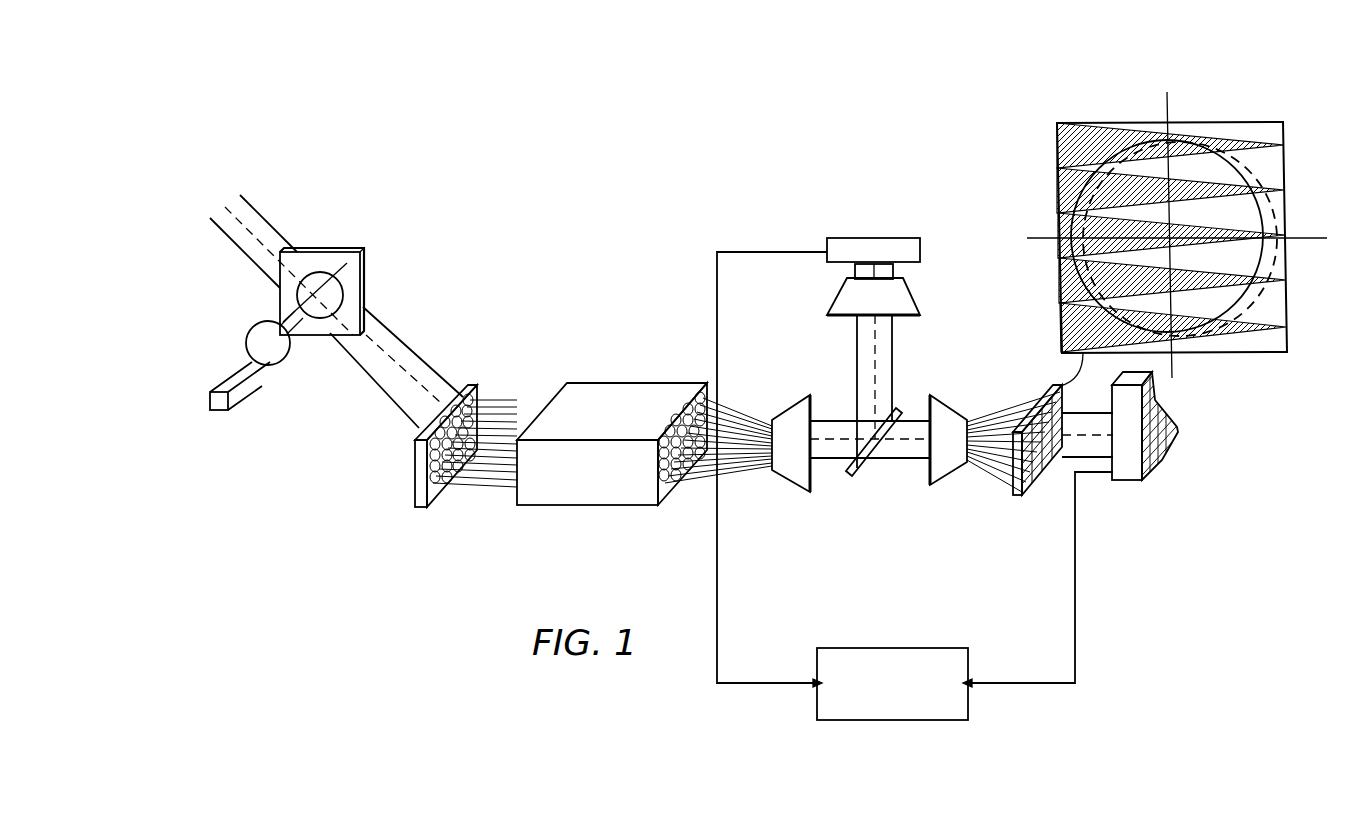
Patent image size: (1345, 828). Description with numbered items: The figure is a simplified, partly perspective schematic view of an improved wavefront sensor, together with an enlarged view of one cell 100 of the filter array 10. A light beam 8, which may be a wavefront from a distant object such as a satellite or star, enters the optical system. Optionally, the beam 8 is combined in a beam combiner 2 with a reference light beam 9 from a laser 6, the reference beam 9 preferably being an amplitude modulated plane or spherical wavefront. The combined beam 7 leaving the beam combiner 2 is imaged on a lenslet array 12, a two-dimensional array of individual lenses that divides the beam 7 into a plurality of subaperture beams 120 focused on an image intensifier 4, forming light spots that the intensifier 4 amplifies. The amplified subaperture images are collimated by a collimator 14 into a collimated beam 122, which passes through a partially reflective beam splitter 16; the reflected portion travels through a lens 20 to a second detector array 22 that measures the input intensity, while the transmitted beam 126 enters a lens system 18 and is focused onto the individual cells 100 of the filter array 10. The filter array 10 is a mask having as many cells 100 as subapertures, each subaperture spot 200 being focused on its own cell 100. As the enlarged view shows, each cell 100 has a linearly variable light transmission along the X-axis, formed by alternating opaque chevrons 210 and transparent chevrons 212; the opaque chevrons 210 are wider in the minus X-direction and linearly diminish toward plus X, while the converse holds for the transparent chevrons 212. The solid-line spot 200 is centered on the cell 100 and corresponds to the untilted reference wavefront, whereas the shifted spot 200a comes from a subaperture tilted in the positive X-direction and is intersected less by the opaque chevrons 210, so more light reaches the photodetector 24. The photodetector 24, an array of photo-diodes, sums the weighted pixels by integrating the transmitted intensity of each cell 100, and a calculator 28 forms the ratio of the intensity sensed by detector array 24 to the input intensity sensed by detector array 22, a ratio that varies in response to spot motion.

The beam combiner 2 is at (381, 226).
The image intensifier 4 is at (590, 507).
The laser 6 is at (237, 402).
The combined beam 7 is at (390, 332).
The light beam 8 is at (259, 276).
The reference light beam 9 is at (303, 345).
The filter array 10 is at (1020, 497).
The lenslet array 12 is at (415, 467).
The collimator 14 is at (797, 410).
The beam splitter 16 is at (850, 473).
The lens system 18 is at (953, 410).
The lens 20 is at (840, 281).
The second detector array 22 is at (827, 240).
The photodetector 24 is at (1125, 478).
The calculator 28 is at (930, 648).
The cell 100 is at (1177, 227).
The subaperture beams 120 is at (497, 400).
The subapertured input beam 122 is at (823, 410).
The transmitted beam 126 is at (913, 410).
The subaperture spot 200 is at (1103, 170).
The shifted spot 200a is at (1243, 307).
The opaque chevrons 210 is at (1130, 128).
The transparent chevrons 212 is at (1192, 167).